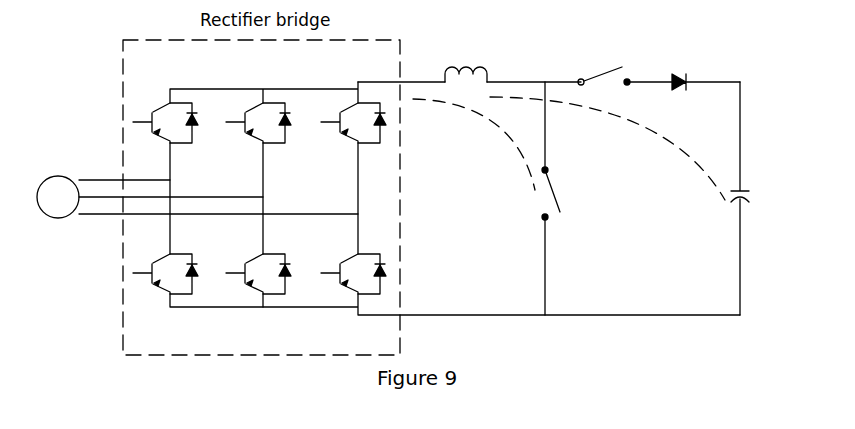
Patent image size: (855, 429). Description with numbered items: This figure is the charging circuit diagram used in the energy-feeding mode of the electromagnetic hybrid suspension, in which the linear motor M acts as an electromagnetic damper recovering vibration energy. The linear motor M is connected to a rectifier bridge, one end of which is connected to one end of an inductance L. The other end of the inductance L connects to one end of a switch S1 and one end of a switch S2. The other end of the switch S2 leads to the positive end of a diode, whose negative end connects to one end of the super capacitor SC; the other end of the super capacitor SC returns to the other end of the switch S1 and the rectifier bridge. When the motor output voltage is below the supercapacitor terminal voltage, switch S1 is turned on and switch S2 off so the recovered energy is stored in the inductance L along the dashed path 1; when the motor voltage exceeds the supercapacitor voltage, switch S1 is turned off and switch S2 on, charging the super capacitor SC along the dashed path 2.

The linear motor M is at (197, 197).
The inductance L is at (466, 60).
The switch S1 is at (560, 198).
The switch S2 is at (604, 60).
The super capacitor SC is at (757, 198).
The current path 1 is at (474, 144).
The current path 2 is at (607, 148).